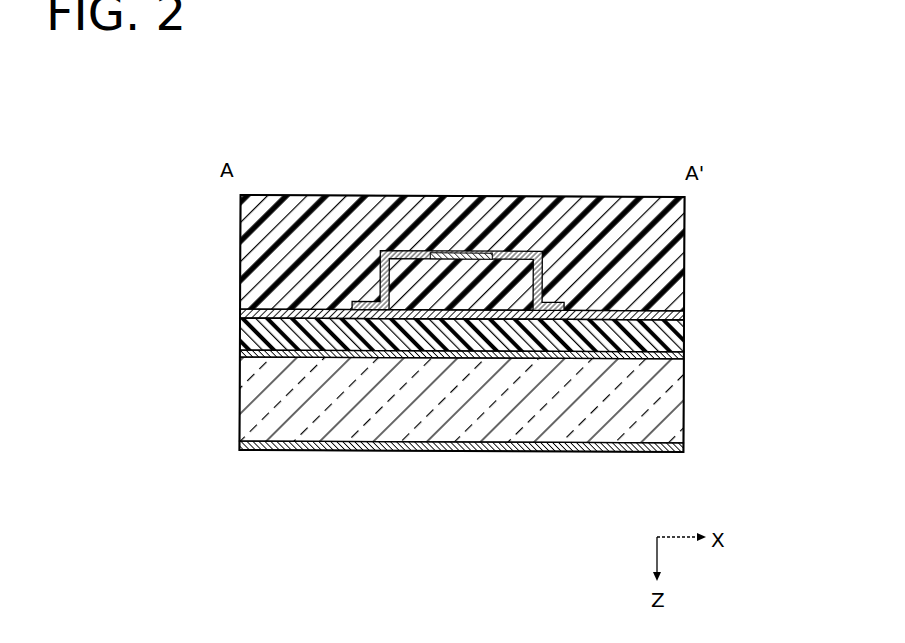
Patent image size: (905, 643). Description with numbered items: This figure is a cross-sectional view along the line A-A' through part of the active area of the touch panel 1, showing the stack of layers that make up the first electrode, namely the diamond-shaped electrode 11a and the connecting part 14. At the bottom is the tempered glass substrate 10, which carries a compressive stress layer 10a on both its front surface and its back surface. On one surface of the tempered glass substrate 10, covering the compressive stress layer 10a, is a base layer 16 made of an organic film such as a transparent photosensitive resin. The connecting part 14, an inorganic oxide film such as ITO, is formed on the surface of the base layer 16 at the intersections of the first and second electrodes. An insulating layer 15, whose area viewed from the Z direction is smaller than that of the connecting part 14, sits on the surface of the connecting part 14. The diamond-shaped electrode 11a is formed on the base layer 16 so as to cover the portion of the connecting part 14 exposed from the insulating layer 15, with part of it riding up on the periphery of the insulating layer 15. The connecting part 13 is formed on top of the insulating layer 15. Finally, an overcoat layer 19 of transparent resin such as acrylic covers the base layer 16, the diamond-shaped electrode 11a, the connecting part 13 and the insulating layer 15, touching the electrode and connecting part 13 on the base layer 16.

The touch panel 1 is at (676, 98).
The tempered glass substrate 10 is at (676, 400).
The compressive stress layer 10a is at (683, 357).
The diamond-shaped electrode 11a is at (683, 318).
The connecting part 13 is at (440, 253).
The connecting part 14 is at (468, 313).
The insulating layer 15 is at (498, 258).
The base layer 16 is at (676, 343).
The overcoat layer 19 is at (677, 253).